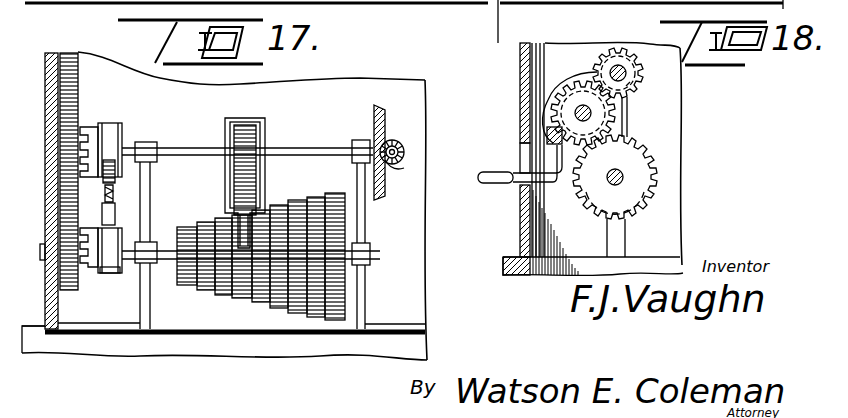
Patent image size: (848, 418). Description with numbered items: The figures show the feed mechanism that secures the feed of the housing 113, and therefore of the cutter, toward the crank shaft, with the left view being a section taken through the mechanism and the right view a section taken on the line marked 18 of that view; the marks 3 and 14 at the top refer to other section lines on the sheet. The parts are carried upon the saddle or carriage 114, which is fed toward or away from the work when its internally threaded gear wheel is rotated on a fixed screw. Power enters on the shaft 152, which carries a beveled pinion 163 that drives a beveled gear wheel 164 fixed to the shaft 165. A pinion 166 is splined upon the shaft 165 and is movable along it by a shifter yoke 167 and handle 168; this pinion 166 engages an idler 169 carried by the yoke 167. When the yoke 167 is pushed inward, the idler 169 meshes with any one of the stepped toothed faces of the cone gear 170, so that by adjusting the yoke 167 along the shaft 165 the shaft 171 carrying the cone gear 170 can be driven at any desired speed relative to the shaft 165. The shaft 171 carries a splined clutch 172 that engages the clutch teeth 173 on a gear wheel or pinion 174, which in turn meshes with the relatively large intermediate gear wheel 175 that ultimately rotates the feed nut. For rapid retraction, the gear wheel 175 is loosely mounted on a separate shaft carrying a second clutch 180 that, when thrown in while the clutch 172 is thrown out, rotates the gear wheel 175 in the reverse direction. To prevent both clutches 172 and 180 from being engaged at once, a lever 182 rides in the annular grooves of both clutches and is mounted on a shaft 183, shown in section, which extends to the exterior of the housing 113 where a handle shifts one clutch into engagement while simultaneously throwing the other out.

In FIG. 18, the section line 3 is at (500, 22).
In FIG. 17, the section line 14 is at (435, 4).
In FIG. 17, the section line 18 is at (257, 70).
In FIG. 17, the housing 113 is at (407, 314).
In FIG. 18, the housing 113 is at (682, 155).
In FIG. 17, the saddle or carriage 114 is at (365, 342).
In FIG. 18, the saddle or carriage 114 is at (514, 271).
In FIG. 17, the shaft 152 is at (405, 152).
In FIG. 17, the beveled pinion 163 is at (397, 170).
In FIG. 17, the beveled gear wheel 164 is at (386, 127).
In FIG. 17, the shaft 165 is at (327, 150).
In FIG. 18, the shaft 165 is at (626, 83).
In FIG. 17, the pinion 166 is at (236, 146).
In FIG. 18, the pinion 166 is at (600, 58).
In FIG. 17, the yoke 167 is at (262, 128).
In FIG. 18, the yoke 167 is at (548, 98).
In FIG. 18, the handle 168 is at (498, 185).
In FIG. 17, the idler 169 is at (235, 188).
In FIG. 18, the idler 169 is at (606, 120).
In FIG. 17, the cone gear 170 is at (243, 297).
In FIG. 18, the cone gear 170 is at (640, 193).
In FIG. 17, the shaft 171 is at (372, 262).
In FIG. 17, the clutch 172 is at (110, 272).
In FIG. 17, the clutch teeth 173 is at (82, 275).
In FIG. 17, the gear wheel or pinion 174 is at (68, 300).
In FIG. 17, the intermediate gear wheel 175 is at (80, 88).
In FIG. 17, the clutch 180 is at (110, 133).
In FIG. 17, the lever 182 is at (112, 215).
In FIG. 17, the shaft 183 is at (113, 193).